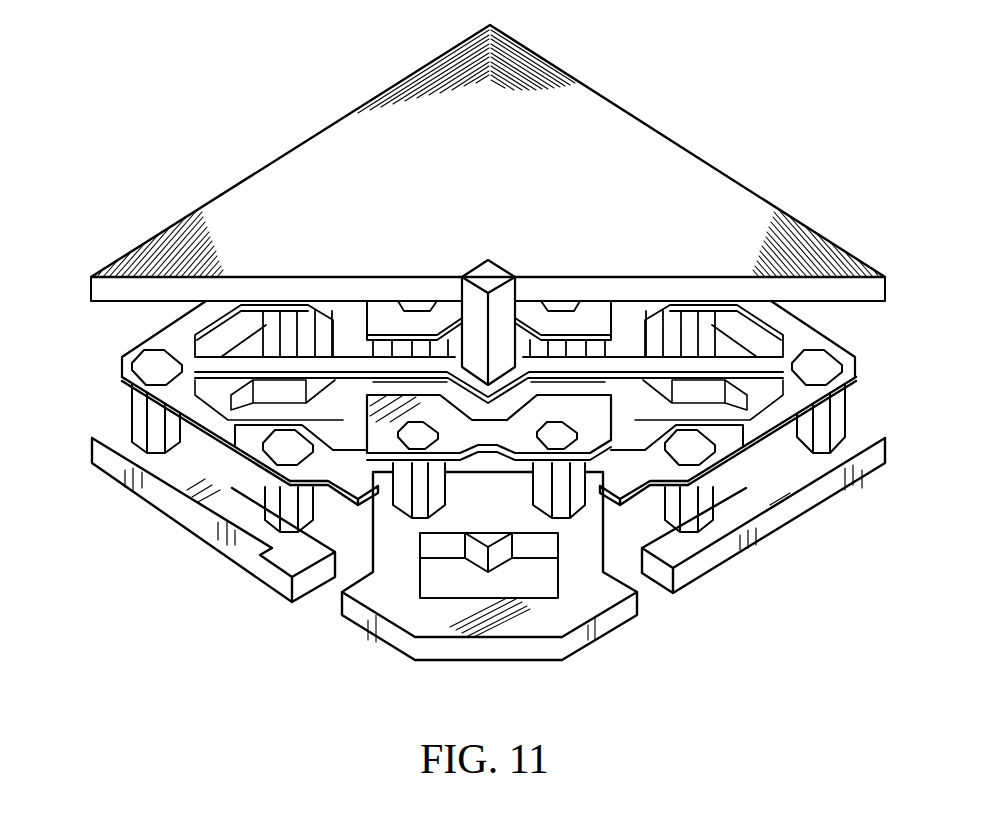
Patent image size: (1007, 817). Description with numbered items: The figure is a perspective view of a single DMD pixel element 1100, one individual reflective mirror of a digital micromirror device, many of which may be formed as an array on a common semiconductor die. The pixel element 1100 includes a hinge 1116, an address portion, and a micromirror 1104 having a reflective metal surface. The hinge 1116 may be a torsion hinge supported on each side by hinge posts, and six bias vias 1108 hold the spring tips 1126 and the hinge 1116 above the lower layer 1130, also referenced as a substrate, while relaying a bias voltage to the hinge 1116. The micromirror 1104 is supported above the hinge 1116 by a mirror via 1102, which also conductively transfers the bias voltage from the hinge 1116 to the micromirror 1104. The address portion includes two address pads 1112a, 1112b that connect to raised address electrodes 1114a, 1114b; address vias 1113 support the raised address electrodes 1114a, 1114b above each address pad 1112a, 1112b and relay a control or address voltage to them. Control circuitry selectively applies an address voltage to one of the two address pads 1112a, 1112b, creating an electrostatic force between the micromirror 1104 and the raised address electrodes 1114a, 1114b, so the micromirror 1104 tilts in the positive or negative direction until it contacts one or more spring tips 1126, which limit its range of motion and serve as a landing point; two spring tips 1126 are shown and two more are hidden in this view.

The DMD pixel element 1100 is at (490, 372).
The mirror via 1102 is at (486, 261).
The micromirror 1104 is at (643, 130).
The bias vias 1108 is at (130, 399).
The address pad 1112a is at (488, 652).
The address pad 1112b is at (598, 307).
The address vias 1113 is at (417, 507).
The raised address electrode 1114a is at (477, 432).
The raised address electrode 1114b is at (380, 307).
The hinge 1116 is at (290, 363).
The spring tips 1126 is at (350, 487).
The lower layer 1130 is at (182, 510).